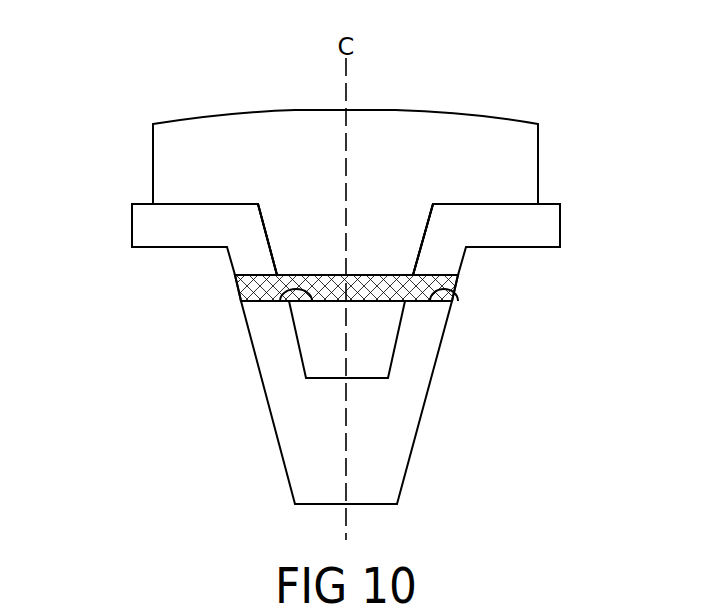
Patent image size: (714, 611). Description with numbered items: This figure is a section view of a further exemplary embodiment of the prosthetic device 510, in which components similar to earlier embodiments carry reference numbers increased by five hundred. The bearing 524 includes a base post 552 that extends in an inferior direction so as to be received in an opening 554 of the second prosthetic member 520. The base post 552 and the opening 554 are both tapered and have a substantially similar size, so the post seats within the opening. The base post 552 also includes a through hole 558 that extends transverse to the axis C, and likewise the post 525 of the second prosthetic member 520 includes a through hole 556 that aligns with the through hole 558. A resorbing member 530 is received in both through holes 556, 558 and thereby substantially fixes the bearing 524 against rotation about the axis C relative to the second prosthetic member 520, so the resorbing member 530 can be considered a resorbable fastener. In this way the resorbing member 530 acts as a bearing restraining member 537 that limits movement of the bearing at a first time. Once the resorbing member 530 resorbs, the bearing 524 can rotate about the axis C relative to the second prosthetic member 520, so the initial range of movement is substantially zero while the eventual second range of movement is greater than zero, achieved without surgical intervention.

The prosthetic device 510 is at (127, 91).
The bearing 524 is at (385, 135).
The second prosthetic member 520 is at (183, 230).
The base post 552 is at (400, 235).
The resorbing member 530 is at (253, 287).
The bearing restraining member 537 is at (214, 273).
The post 525 is at (298, 443).
The opening 554 is at (396, 356).
The through hole 556 is at (455, 296).
The through hole 558 is at (281, 301).